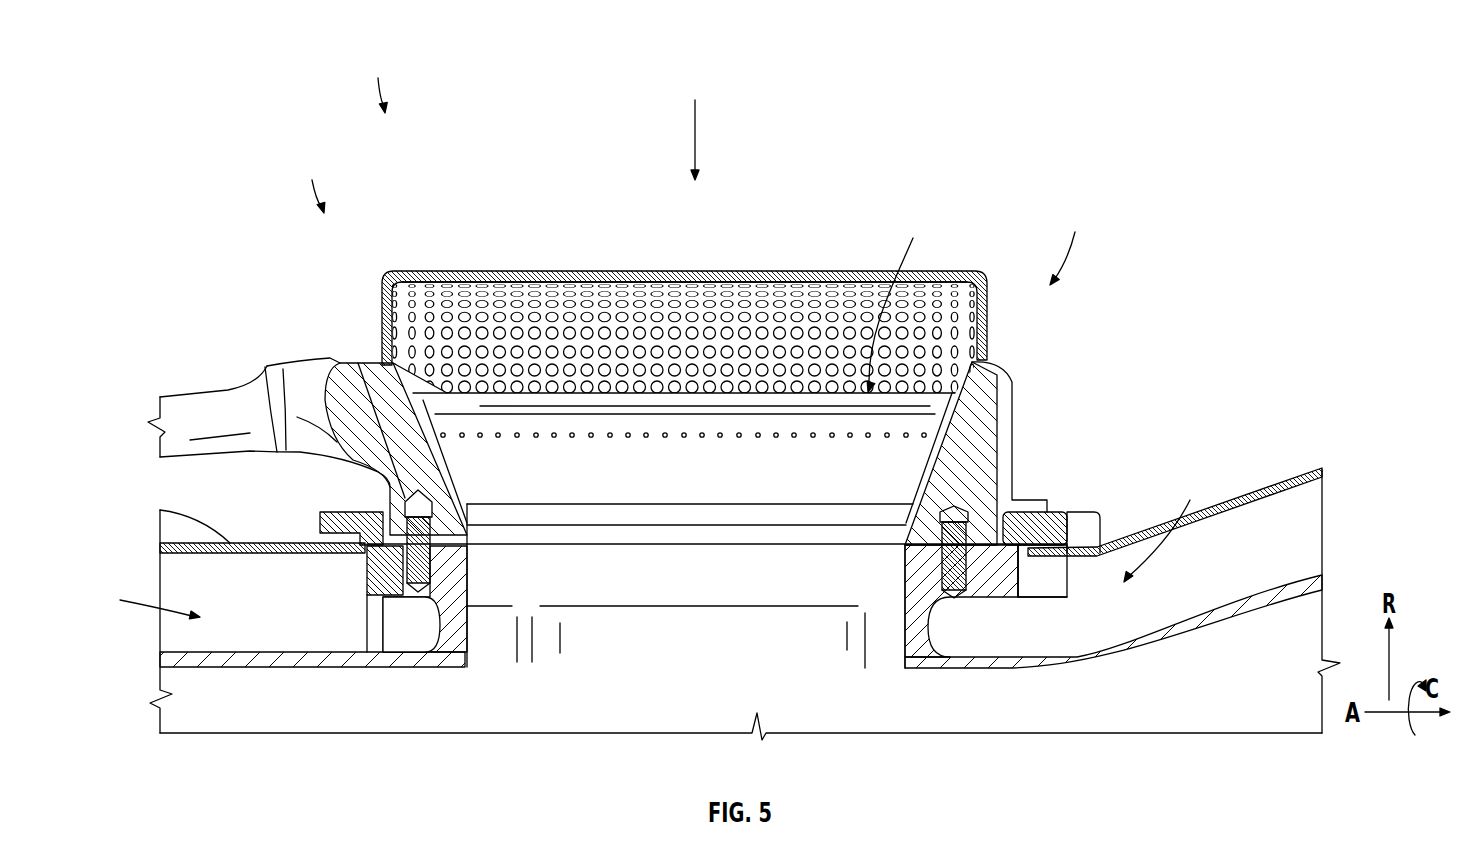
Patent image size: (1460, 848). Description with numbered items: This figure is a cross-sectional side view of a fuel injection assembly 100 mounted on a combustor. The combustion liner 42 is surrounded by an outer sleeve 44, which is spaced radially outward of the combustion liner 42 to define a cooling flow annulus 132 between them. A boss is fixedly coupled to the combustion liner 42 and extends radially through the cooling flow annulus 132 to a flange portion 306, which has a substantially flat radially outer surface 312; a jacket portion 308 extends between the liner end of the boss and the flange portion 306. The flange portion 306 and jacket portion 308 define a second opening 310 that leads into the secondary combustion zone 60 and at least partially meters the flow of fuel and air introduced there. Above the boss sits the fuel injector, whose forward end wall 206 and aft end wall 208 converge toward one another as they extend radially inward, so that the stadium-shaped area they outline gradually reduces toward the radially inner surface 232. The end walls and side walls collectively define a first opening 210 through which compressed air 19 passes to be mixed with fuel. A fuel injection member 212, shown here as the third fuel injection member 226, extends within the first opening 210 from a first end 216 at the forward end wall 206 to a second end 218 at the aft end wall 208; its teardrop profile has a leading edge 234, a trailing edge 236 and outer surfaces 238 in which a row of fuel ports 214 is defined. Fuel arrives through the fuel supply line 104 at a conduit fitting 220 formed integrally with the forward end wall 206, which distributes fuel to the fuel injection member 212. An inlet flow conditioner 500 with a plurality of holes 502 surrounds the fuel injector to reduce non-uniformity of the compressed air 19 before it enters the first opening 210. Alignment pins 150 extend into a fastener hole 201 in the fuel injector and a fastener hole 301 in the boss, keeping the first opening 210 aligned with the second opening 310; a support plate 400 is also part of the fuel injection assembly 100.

The fuel injection assembly 100 is at (375, 80).
The first end 216 is at (312, 180).
The compressed air 19 is at (704, 148).
The inlet flow conditioner 500 is at (557, 272).
The holes 502 is at (753, 278).
The fuel injection member 212 is at (587, 402).
The third fuel injection member 226 is at (673, 402).
The leading edge 234 is at (742, 402).
The first opening 210 is at (900, 301).
The second end 218 is at (1070, 241).
The fuel supply line 104 is at (200, 400).
The conduit fitting 220 is at (292, 362).
The forward end wall 206 is at (365, 363).
The aft end wall 208 is at (977, 390).
The radially inner surface 232 is at (923, 527).
The alignment pin 150 is at (440, 558).
The support plate 400 is at (1062, 512).
The outer sleeve 44 is at (232, 541).
The cooling flow annulus 132 is at (647, 542).
The fastener hole 201 is at (407, 513).
The fastener hole 301 is at (407, 550).
The fuel ports 214 is at (570, 438).
The outer surfaces 238 is at (699, 496).
The trailing edge 236 is at (742, 498).
The flange portion 306 is at (387, 583).
The second opening 310 is at (691, 639).
The secondary combustion zone 60 is at (696, 716).
The combustion liner 42 is at (257, 667).
The radially outer surface 312 is at (922, 545).
The jacket portion 308 is at (998, 583).